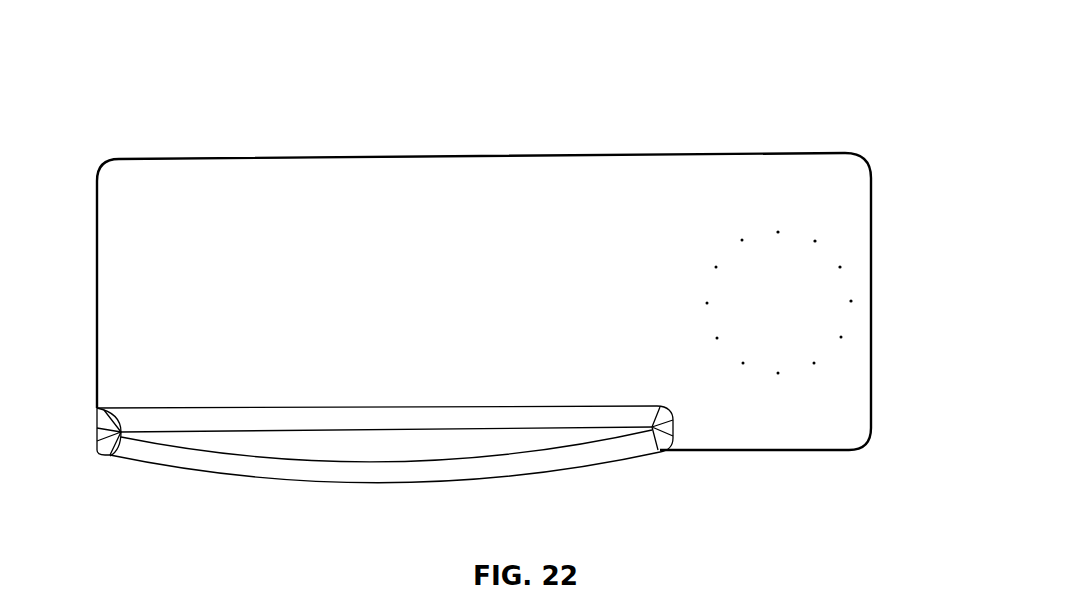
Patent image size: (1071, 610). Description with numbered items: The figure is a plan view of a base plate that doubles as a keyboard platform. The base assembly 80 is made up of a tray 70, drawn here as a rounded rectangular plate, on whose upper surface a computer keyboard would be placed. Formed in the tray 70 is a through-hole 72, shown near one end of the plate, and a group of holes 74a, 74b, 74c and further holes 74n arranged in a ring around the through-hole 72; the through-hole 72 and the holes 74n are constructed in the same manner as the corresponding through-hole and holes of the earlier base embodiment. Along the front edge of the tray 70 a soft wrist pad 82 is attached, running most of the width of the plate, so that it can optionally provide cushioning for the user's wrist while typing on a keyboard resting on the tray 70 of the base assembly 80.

The tray 70 is at (405, 282).
The through-hole 72 is at (778, 302).
The hole 74a is at (778, 232).
The hole 74b is at (815, 241).
The hole 74c is at (840, 267).
The holes 74n is at (851, 301).
The base assembly 80 is at (178, 158).
The soft wrist pad 82 is at (243, 442).